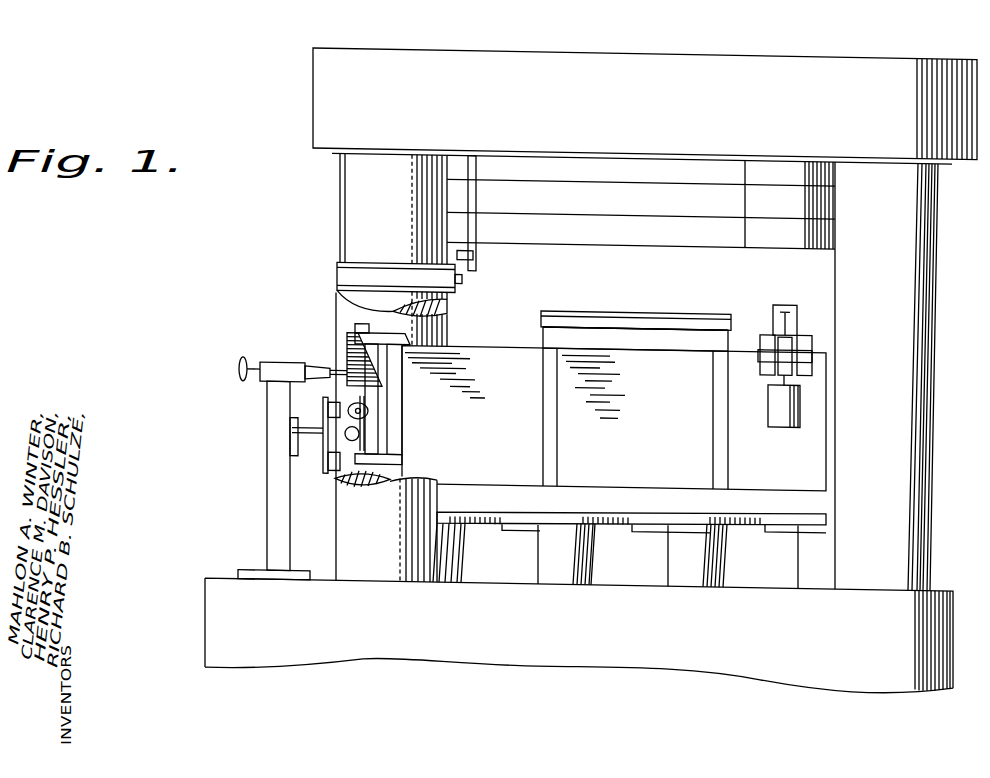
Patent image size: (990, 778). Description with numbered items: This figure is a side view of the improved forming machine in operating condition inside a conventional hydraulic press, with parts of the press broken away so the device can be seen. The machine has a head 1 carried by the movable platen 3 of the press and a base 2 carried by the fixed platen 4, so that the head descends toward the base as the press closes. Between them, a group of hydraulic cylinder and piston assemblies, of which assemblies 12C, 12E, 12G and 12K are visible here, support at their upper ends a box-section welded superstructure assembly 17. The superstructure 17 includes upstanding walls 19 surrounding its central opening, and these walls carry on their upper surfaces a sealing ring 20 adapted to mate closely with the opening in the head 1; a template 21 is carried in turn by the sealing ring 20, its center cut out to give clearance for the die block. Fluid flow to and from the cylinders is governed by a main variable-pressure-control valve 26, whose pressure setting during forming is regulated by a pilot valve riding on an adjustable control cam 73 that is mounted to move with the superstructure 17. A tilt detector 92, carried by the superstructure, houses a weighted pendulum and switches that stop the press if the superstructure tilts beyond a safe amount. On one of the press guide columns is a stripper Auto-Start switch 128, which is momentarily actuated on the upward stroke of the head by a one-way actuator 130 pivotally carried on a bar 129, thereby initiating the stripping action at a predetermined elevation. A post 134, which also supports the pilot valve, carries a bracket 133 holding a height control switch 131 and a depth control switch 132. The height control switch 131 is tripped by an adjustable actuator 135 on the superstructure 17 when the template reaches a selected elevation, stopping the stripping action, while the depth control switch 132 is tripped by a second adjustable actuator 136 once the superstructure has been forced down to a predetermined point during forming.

The head 1 is at (749, 248).
The base 2 is at (485, 338).
The movable platen 3 is at (657, 110).
The fixed platen 4 is at (612, 623).
The superstructure assembly 17 is at (640, 445).
The upstanding walls 19 is at (681, 343).
The sealing ring 20 is at (714, 321).
The template 21 is at (680, 301).
The main variable-pressure-control valve 26 is at (285, 355).
The adjustable control cam 73 is at (347, 330).
The tilt detector 92 is at (800, 321).
The stripper Auto-Start switch 128 is at (462, 287).
The bar 129 is at (474, 232).
The one-way actuator 130 is at (457, 247).
The height control switch 131 is at (323, 404).
The depth control switch 132 is at (325, 460).
The bracket 133 is at (322, 437).
The post 134 is at (268, 520).
The adjustable actuator 135 is at (368, 407).
The second adjustable actuator 136 is at (359, 443).
The hydraulic cylinder and piston assembly 12C is at (502, 527).
The hydraulic cylinder and piston assembly 12E is at (630, 526).
The hydraulic cylinder and piston assembly 12G is at (763, 525).
The hydraulic cylinder and piston assembly 12K is at (794, 531).